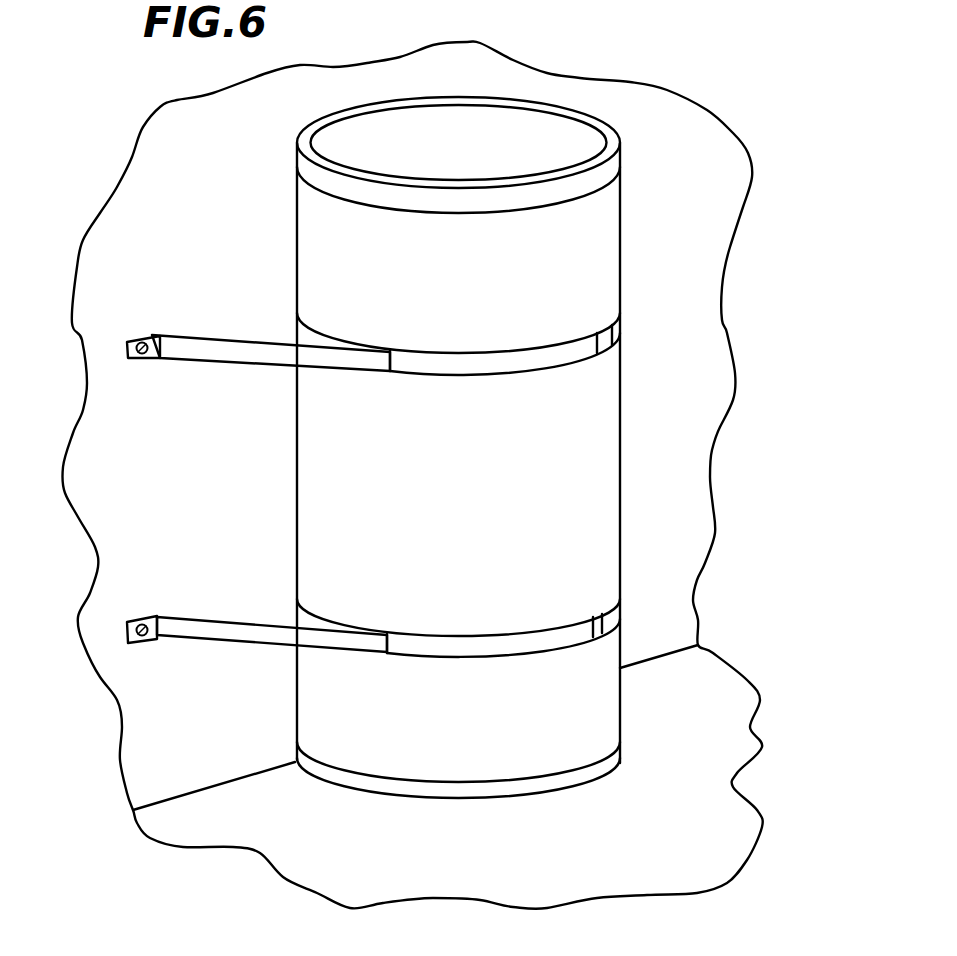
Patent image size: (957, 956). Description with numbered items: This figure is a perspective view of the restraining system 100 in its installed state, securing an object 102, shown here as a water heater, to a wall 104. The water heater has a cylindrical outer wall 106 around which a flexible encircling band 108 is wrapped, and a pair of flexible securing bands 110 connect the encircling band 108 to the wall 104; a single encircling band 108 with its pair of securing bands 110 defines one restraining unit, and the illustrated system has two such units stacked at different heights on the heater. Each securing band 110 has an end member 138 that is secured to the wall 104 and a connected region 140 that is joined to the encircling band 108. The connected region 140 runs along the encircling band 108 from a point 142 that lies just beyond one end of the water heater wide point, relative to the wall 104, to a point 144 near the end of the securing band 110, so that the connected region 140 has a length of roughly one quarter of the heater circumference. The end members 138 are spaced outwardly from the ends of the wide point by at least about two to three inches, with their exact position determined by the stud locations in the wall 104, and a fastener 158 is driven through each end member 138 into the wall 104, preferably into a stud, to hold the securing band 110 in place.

The restraining system 100 is at (190, 223).
The object 102 is at (640, 192).
The wall 104 is at (110, 239).
The cylindrical outer wall 106 is at (590, 253).
The encircling band 108 is at (603, 330).
The securing band 110 is at (220, 345).
The end member 138 is at (130, 340).
The connected region 140 is at (477, 363).
The point 142 is at (393, 342).
The point 144 is at (601, 372).
The fastener 158 is at (150, 359).